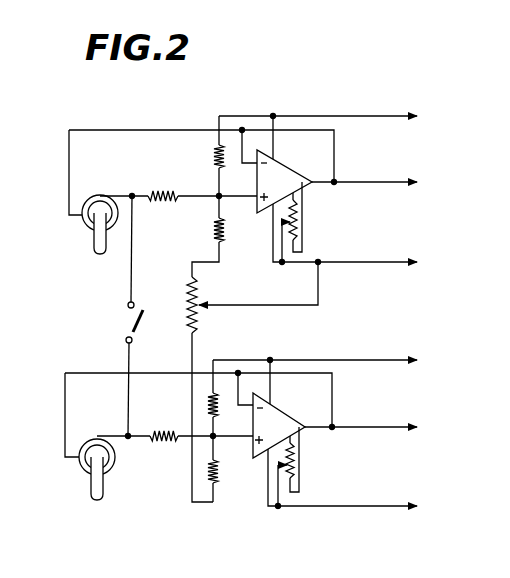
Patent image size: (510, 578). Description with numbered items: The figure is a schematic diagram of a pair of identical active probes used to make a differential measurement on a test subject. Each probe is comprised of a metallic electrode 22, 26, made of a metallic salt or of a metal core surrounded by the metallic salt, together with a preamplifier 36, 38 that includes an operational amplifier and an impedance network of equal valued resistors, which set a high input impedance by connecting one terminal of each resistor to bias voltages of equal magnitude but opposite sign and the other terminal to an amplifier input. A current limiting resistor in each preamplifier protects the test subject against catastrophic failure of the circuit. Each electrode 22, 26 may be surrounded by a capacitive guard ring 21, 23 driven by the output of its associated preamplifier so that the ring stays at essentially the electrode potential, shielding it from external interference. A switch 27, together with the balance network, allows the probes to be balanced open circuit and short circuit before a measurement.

The capacitor ring 21 is at (100, 195).
The metallic electrode 22 is at (93, 248).
The capacitor ring 23 is at (90, 440).
The metallic electrode 26 is at (91, 494).
The switch 27 is at (145, 309).
The preamplifier 36 is at (219, 116).
The preamplifier 38 is at (213, 360).